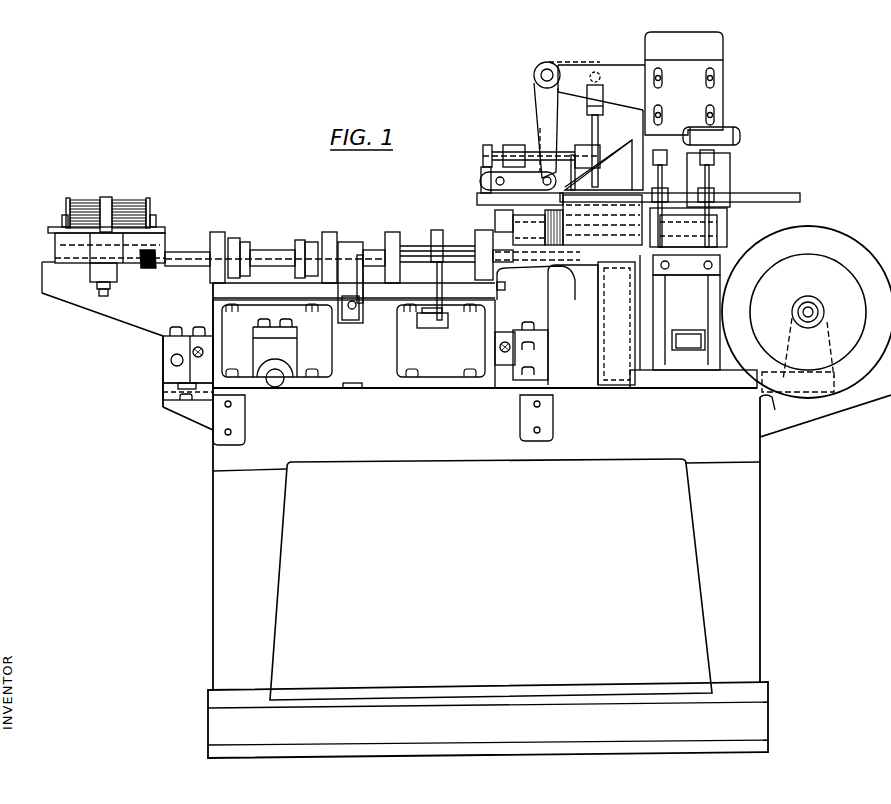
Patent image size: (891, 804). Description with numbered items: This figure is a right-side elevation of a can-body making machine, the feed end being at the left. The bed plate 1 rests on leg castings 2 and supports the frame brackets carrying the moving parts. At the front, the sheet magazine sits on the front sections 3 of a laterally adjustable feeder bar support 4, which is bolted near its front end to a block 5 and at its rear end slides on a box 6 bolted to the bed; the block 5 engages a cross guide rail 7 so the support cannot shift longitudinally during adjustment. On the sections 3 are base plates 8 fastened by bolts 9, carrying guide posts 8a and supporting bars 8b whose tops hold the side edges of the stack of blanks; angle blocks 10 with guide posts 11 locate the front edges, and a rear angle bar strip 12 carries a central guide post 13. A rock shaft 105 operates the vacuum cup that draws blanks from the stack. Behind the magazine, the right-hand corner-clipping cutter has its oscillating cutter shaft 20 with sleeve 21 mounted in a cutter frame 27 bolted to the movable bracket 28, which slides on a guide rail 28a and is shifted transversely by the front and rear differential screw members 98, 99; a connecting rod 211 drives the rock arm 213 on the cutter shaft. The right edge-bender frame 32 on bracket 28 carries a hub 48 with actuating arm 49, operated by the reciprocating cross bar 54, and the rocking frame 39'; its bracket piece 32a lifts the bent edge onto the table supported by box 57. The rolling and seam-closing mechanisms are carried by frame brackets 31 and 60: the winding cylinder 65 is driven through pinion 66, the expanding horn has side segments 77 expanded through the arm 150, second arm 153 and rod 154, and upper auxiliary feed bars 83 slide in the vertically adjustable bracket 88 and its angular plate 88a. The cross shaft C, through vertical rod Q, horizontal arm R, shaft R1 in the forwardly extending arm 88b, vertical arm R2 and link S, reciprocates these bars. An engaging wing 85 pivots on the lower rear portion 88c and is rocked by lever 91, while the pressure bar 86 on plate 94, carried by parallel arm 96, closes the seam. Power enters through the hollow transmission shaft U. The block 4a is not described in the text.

The bed plate 1 is at (392, 452).
The leg castings 2 is at (272, 550).
The front sections 3 is at (93, 276).
The feeder bar support 4 is at (157, 318).
The block 4a is at (286, 351).
The block 5 is at (172, 379).
The box 6 is at (545, 362).
The cross guide rail 7 is at (182, 396).
The base plates 8 is at (57, 246).
The guide posts 8a is at (107, 200).
The supporting bars 8b is at (57, 259).
The bolts 9 is at (105, 296).
The angle blocks 10 is at (62, 224).
The guide posts 11 is at (66, 206).
The angle bar strip 12 is at (155, 226).
The central guide post 13 is at (150, 206).
The oscillating cutter shaft 20 is at (270, 252).
The sleeve 21 is at (244, 243).
The cutter frame 27 is at (216, 233).
The movable bracket 28 is at (334, 321).
The guide rail 28a is at (353, 390).
The frame bracket 31 is at (484, 182).
The right edge-bender frame 32 is at (392, 232).
The bracket piece 32a is at (518, 268).
The rocking frame 39' is at (437, 226).
The hub 48 is at (456, 265).
The actuating arm 49 is at (442, 289).
The reciprocating cross bar 54 is at (427, 329).
The box 57 is at (617, 313).
The frame bracket 60 is at (726, 47).
The winding cylinder 65 is at (608, 245).
The pinion 66 is at (560, 247).
The side segments 77 is at (730, 221).
The auxiliary feed bars 83 is at (780, 194).
The engaging wing 85 is at (712, 239).
The pressure bar 86 is at (693, 272).
The vertically adjustable bracket 88 is at (716, 97).
The angular plate 88a is at (618, 163).
The forwardly extending arm 88b is at (623, 78).
The lower rear portion 88c is at (722, 172).
The rocking lever 91 is at (735, 127).
The plate or block 94 is at (698, 313).
The horizontal parallel arm 96 is at (694, 331).
The front screw member 98 is at (205, 352).
The rear screw member 99 is at (498, 347).
The rock shaft 105 is at (170, 359).
The arm 150 is at (517, 150).
The second arm 153 is at (583, 147).
The rod 154 is at (578, 170).
The connecting rod 211 is at (352, 310).
The rock arm 213 is at (361, 292).
The cross shaft C is at (277, 388).
The vertical rod Q is at (597, 133).
The horizontal arm R is at (574, 75).
The shaft R1 is at (541, 68).
The vertical arm R2 is at (543, 113).
The link S is at (518, 181).
The hollow transmission shaft U is at (815, 312).